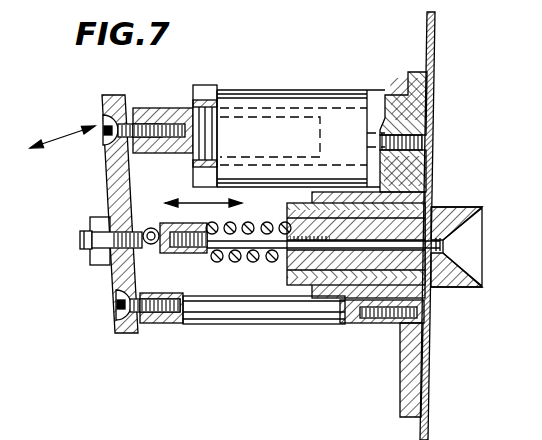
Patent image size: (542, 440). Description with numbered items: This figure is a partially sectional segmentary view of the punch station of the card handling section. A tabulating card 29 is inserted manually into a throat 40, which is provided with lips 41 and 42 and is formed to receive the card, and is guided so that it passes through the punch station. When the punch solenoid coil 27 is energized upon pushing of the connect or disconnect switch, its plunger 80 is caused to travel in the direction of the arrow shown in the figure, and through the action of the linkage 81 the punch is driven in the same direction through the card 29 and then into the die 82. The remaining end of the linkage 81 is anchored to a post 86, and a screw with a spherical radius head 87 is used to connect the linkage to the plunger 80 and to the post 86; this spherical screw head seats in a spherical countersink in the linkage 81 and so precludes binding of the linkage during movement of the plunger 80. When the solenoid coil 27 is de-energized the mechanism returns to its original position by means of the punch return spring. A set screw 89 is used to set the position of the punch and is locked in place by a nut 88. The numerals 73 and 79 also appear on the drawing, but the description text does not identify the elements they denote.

The punch solenoid coil 27 is at (272, 80).
The card 29 is at (428, 387).
The throat 40 is at (484, 252).
The lip 41 is at (466, 208).
The lip 42 is at (458, 289).
The member 73 is at (536, 350).
The inner sleeve 79 is at (305, 91).
The plunger 80 is at (156, 108).
The linkage 81 is at (107, 183).
The die 82 is at (441, 202).
The post 86 is at (260, 326).
The screw with spherical radius head 87 is at (102, 124).
The nut 88 is at (101, 266).
The set screw 89 is at (82, 240).